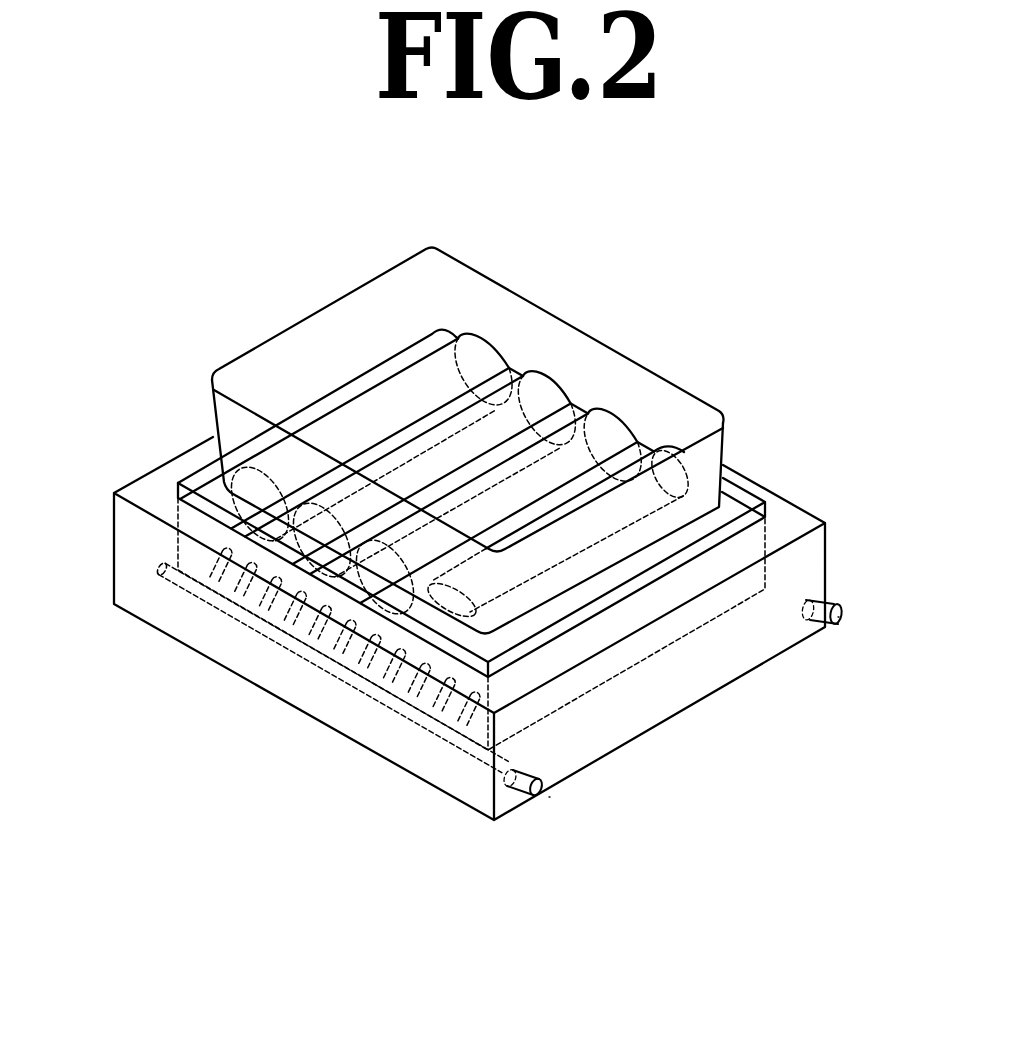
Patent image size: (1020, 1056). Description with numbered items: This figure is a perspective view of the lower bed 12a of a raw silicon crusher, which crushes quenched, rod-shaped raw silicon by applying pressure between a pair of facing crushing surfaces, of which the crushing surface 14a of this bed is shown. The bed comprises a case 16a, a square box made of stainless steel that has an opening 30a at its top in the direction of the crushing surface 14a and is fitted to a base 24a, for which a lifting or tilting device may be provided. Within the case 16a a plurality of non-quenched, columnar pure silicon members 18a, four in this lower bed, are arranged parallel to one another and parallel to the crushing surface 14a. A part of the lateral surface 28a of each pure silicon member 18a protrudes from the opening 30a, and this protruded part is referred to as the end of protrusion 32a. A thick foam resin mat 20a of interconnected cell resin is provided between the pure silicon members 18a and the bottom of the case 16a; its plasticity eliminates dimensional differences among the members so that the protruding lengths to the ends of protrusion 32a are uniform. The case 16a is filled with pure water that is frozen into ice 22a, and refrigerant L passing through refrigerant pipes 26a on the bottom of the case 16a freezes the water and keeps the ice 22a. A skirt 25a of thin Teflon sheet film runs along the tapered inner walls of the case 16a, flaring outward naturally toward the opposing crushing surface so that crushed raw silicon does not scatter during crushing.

The lower bed 12a is at (139, 269).
The crushing surface 14a is at (648, 337).
The case 16a is at (183, 492).
The pure silicon members 18a is at (280, 453).
The foam resin mat 20a is at (203, 484).
The ice 22a is at (427, 422).
The base 24a is at (131, 554).
The skirt 25a is at (492, 305).
The refrigerant pipes 26a is at (822, 604).
The lateral surface 28a is at (445, 360).
The opening 30a is at (694, 376).
The end of protrusion 32a is at (340, 422).
The refrigerant L is at (843, 620).